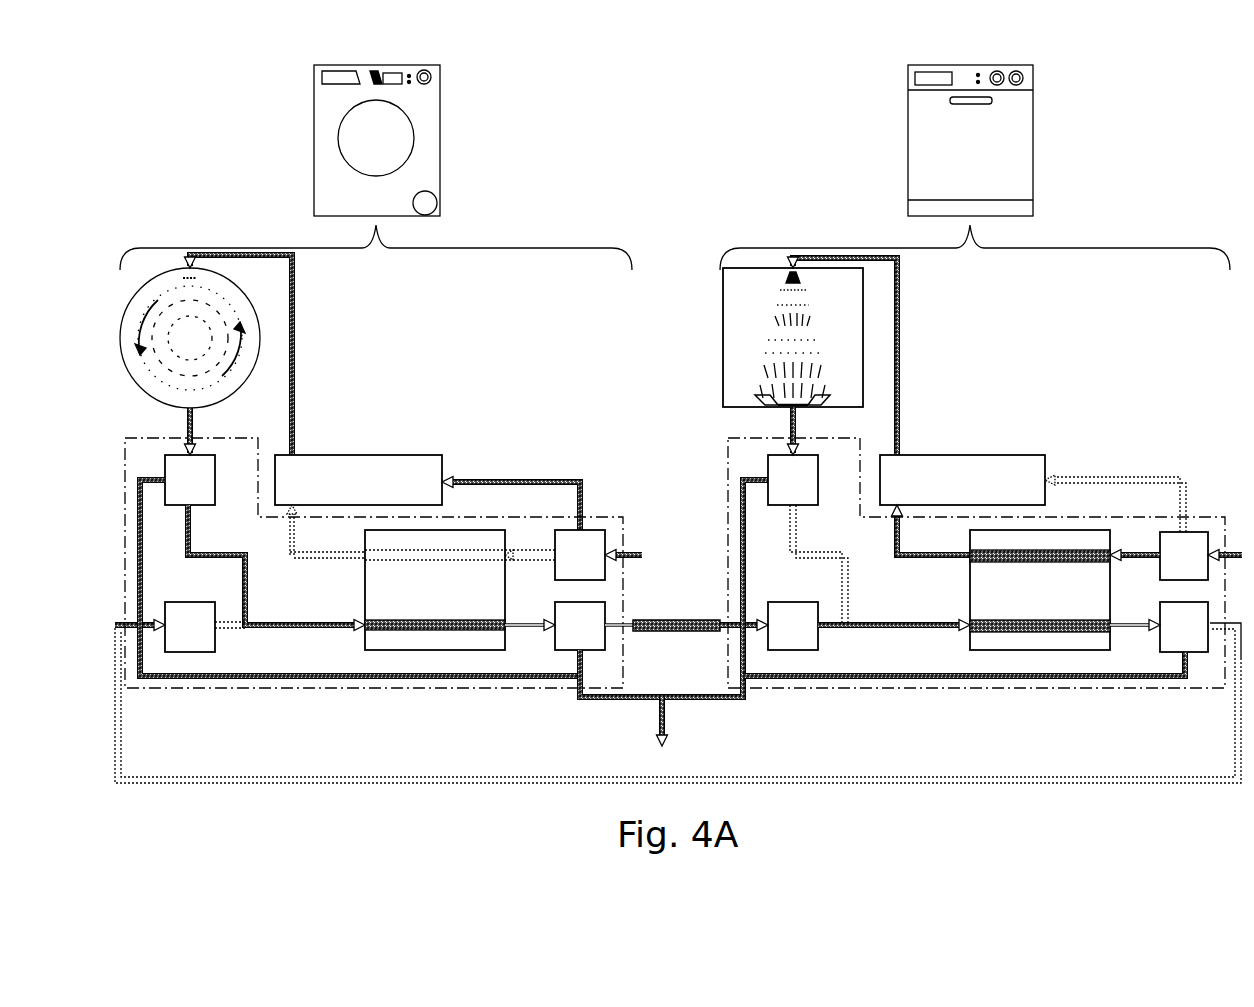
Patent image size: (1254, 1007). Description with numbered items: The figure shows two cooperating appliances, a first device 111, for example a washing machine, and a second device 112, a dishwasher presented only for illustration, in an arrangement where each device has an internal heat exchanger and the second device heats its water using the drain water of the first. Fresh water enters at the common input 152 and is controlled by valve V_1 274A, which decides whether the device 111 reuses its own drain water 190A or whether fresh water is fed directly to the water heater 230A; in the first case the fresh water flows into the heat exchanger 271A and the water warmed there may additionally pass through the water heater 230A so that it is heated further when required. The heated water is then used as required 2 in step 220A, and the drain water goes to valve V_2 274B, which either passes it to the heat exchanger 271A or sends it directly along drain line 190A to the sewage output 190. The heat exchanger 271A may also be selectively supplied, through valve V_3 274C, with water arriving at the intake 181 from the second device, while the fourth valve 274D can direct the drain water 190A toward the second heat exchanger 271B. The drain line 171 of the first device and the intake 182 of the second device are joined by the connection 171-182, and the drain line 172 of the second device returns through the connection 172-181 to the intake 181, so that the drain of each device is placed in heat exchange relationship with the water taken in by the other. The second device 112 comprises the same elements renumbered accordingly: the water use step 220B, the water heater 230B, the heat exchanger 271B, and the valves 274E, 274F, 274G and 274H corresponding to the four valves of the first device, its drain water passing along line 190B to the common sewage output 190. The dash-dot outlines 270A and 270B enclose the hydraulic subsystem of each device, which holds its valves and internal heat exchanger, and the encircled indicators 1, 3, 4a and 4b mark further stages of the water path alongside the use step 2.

The first device 111 is at (497, 113).
The second device 112 is at (1095, 113).
The water use step 220A is at (258, 325).
The shower / dishwasher wash chamber 220B is at (983, 310).
The water heater 230A is at (497, 437).
The water heater of second appliance 230B is at (1095, 437).
The heat exchanger 271A is at (495, 538).
The second heat exchanger 271B is at (1043, 640).
The valve V_1 274A is at (590, 538).
The valve V_2 274B is at (207, 467).
The valve V_3 274C is at (318, 665).
The valve V_4 274D is at (598, 615).
The valve V_1 of second appliance 274E is at (1172, 538).
The valve V_2 of second appliance 274F is at (777, 465).
The valve V_3 of second appliance 274G is at (800, 605).
The valve V_4 of second appliance 274H is at (1170, 642).
The hydraulic circuit of first appliance 270A is at (397, 745).
The hydraulic circuit of second appliance 270B is at (930, 745).
The input 152 is at (708, 540).
The drain line 171 is at (617, 625).
The water intake 181 is at (147, 627).
The water intake 182 is at (752, 627).
The drain line 172 is at (1222, 625).
The sewage output 190 is at (740, 745).
The drain water 190A is at (197, 676).
The drain line of second appliance 190B is at (860, 676).
The connection between outlet 171 and inlet 182 171-182 is at (668, 625).
The connection between outlet 172 and inlet 181 172-181 is at (513, 781).
The flow step 1 is at (501, 458).
The use of heated water 2 is at (206, 424).
The flow step 3 is at (355, 608).
The flow step 4a is at (960, 640).
The flow step 4b is at (960, 543).